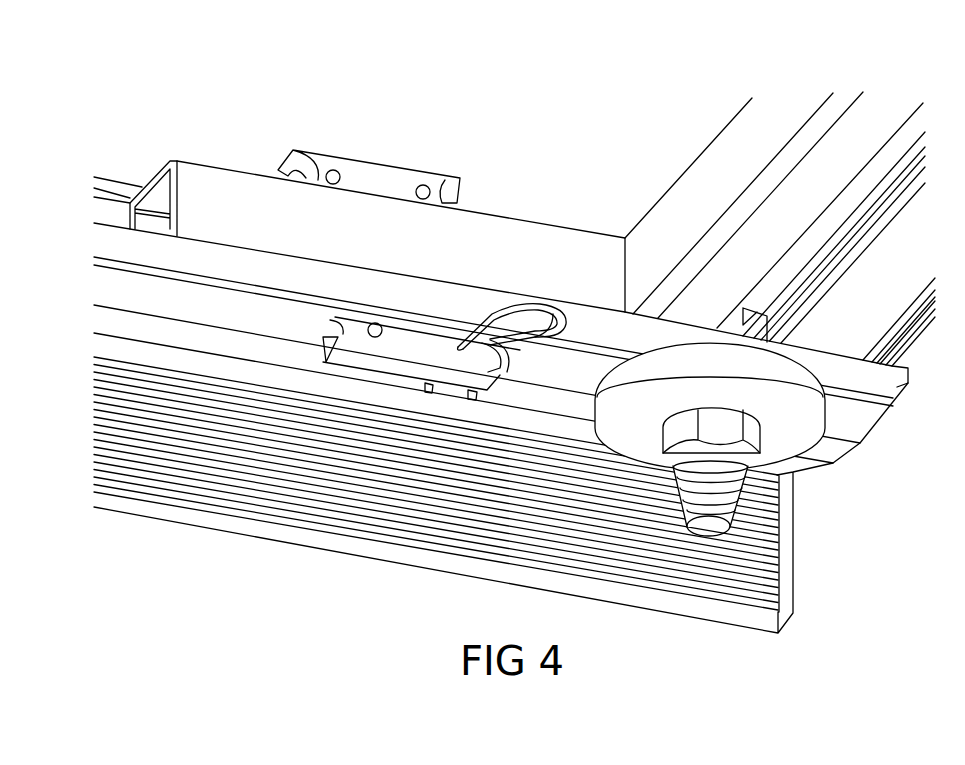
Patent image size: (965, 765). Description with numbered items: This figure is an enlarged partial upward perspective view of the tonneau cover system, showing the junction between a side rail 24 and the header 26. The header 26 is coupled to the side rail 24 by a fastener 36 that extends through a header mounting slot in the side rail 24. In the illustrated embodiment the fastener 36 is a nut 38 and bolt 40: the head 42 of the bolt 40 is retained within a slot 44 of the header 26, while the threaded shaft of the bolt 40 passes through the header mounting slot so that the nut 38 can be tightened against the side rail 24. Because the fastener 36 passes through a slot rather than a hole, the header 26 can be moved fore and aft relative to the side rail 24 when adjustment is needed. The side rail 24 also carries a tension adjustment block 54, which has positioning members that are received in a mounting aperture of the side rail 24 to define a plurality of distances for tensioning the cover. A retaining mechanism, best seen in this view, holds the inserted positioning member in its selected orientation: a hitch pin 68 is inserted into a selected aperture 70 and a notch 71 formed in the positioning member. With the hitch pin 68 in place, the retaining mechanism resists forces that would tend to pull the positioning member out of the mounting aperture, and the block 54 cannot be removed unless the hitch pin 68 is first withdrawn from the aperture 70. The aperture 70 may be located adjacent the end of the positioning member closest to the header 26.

The side rail 24 is at (108, 285).
The header 26 is at (785, 102).
The fastener 36 is at (752, 489).
The nut 38 is at (740, 453).
The bolt 40 is at (708, 536).
The head of the bolt 42 is at (757, 312).
The slot of the header 44 is at (847, 225).
The tension adjustment block 54 is at (382, 158).
The hitch pin 68 is at (553, 310).
The aperture 70 is at (460, 345).
The notch 71 is at (503, 360).